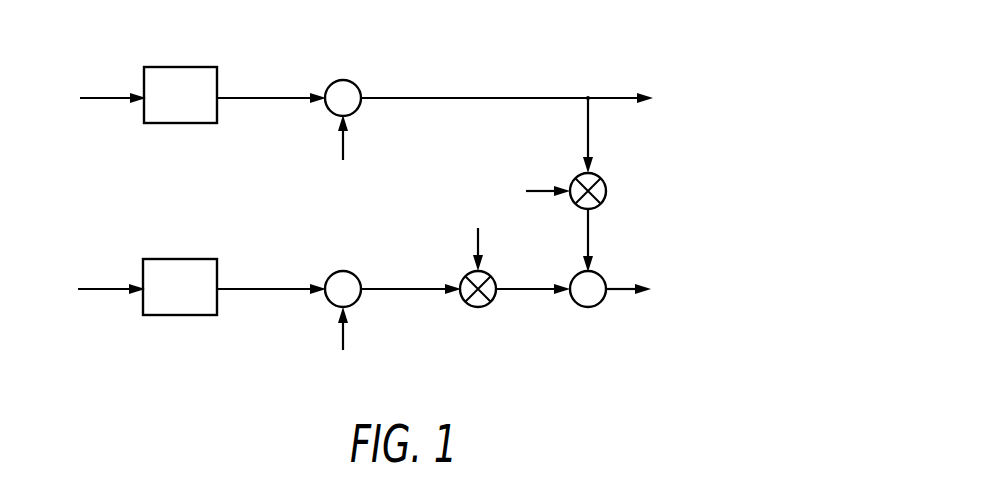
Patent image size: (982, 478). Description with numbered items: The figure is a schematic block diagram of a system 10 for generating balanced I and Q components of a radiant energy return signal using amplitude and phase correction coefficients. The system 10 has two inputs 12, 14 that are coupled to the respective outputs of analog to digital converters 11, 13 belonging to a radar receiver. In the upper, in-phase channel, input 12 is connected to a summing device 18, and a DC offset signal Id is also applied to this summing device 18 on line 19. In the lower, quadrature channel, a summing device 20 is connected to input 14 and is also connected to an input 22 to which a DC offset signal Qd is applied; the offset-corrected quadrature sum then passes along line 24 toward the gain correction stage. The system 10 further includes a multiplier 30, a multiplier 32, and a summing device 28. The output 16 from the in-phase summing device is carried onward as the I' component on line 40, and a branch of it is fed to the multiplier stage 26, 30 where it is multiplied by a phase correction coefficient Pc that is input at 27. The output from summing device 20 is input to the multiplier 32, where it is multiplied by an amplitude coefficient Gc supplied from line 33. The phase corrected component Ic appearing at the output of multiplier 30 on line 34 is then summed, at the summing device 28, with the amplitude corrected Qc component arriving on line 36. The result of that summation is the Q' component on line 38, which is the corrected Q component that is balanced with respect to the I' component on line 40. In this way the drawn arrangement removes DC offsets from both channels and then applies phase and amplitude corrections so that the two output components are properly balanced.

The system 10 is at (540, 25).
The analog to digital converter 11 is at (172, 67).
The input 12 is at (260, 98).
The analog to digital converter 13 is at (195, 259).
The input 14 is at (278, 290).
The output from summing device 16 is at (460, 97).
The summing device 18 is at (358, 107).
The line 19 is at (343, 152).
The summing device 20 is at (341, 271).
The input 22 is at (343, 345).
The offset-corrected Q signal line 24 is at (418, 290).
The multiplier 26 is at (590, 121).
The phase correction coefficient input 27 is at (543, 191).
The summing device 28 is at (588, 307).
The multiplier 30 is at (578, 176).
The multiplier 32 is at (466, 276).
The line 33 is at (481, 230).
The line 34 is at (590, 230).
The line 36 is at (525, 291).
The line 38 is at (617, 291).
The line 40 is at (591, 80).